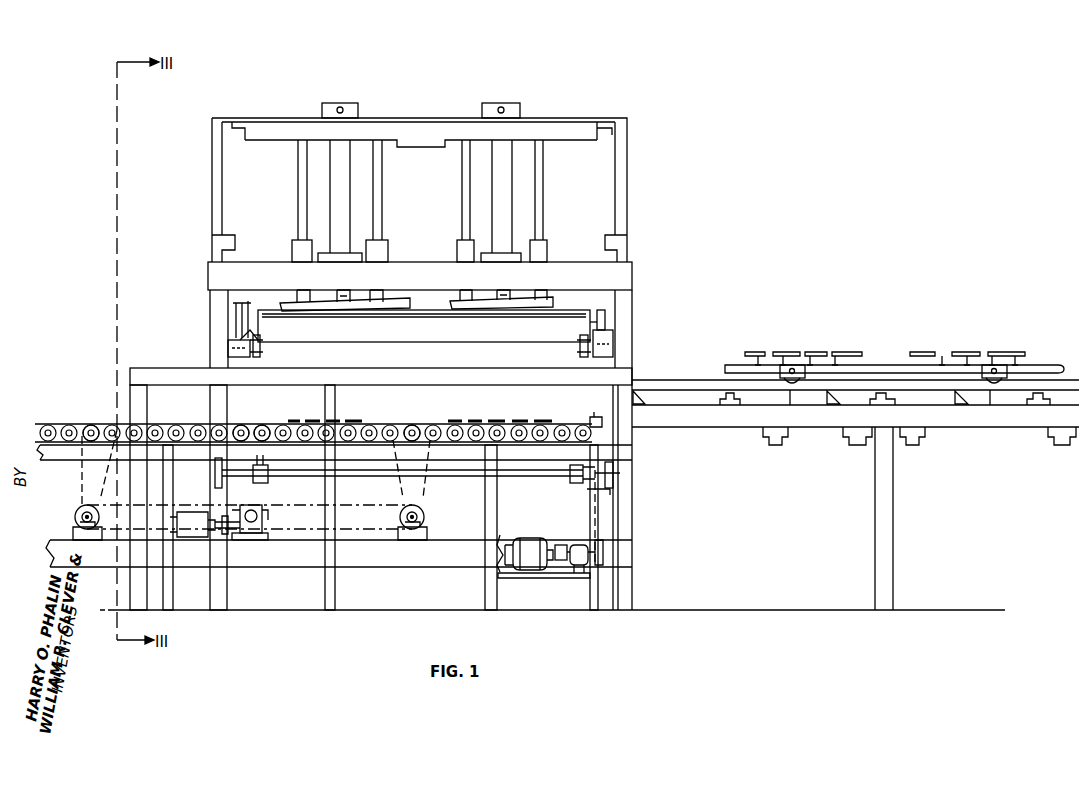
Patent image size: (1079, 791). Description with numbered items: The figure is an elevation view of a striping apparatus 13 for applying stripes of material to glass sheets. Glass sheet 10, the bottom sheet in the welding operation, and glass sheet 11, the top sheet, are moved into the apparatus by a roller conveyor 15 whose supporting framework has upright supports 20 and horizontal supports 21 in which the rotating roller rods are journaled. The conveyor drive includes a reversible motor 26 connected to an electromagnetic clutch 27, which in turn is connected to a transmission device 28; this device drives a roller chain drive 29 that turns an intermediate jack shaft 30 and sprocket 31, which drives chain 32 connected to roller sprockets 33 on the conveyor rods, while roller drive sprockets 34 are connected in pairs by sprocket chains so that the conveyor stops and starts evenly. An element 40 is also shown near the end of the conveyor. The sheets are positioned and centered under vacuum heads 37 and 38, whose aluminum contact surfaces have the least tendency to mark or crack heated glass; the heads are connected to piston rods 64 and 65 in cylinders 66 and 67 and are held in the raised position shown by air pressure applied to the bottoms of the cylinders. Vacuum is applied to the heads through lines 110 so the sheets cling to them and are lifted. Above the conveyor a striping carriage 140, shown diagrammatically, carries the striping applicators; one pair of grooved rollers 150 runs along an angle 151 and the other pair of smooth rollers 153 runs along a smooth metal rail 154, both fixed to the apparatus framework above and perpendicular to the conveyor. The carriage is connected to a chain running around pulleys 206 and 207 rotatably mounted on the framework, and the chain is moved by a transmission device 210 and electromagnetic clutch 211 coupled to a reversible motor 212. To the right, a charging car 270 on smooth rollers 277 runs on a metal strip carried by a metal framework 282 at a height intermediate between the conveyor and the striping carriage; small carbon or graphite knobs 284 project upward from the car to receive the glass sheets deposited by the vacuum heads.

The glass sheet 10 is at (563, 314).
The glass sheet 11 is at (405, 314).
The striping apparatus 13 is at (207, 333).
The roller conveyor 15 is at (38, 433).
The upright supports 20 is at (173, 592).
The horizontal supports 21 is at (166, 424).
The reversible motor 26 is at (185, 511).
The electromagnetic clutch 27 is at (215, 532).
The transmission device 28 is at (256, 510).
The roller chain drive 29 is at (360, 505).
The intermediate jack shaft 30 is at (76, 519).
The sprocket 31 is at (78, 508).
The chain 32 is at (422, 500).
The roller sprockets 33 is at (104, 425).
The roller drive sprockets 34 is at (252, 425).
The vacuum head 37 is at (386, 306).
The vacuum head 38 is at (556, 305).
The stop 40 is at (594, 402).
The piston rod 64 is at (345, 293).
The piston rod 65 is at (506, 292).
The cylinder 66 is at (350, 183).
The cylinder 67 is at (512, 183).
The vacuum lines 110 is at (298, 183).
The striping carriage 140 is at (416, 343).
The grooved rollers 150 is at (236, 315).
The angle 151 is at (235, 336).
The smooth rollers 153 is at (607, 318).
The smooth metal rail 154 is at (613, 336).
The pulley 206 is at (261, 350).
The pulley 207 is at (268, 483).
The transmission device 210 is at (581, 545).
The electromagnetic clutch 211 is at (558, 545).
The reversible motor 212 is at (527, 538).
The charging car 270 is at (1050, 365).
The smooth rollers 277 is at (790, 390).
The metal framework 282 is at (893, 460).
The carbon or graphite knobs 284 is at (797, 355).